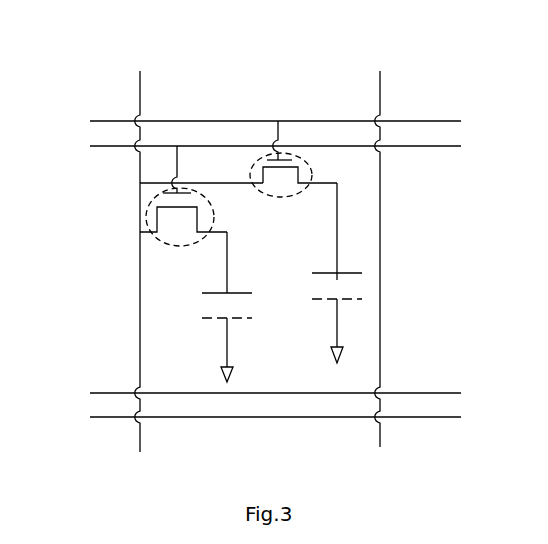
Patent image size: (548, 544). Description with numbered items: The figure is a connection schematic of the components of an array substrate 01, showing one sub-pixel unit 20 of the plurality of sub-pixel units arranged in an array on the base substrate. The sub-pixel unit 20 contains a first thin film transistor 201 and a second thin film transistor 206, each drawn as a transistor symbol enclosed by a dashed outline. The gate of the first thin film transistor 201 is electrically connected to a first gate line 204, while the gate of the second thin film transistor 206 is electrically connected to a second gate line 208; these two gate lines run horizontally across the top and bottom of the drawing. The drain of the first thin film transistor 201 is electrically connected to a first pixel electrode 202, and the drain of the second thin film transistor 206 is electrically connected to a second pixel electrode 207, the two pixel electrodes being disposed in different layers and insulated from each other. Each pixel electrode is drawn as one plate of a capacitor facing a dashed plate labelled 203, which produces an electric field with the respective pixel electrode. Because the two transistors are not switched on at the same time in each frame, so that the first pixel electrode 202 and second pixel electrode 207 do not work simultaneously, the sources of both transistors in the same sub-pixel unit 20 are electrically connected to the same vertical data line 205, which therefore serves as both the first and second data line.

The array substrate 01 is at (103, 39).
The sub-pixel unit 20 is at (309, 113).
The first thin film transistor 201 is at (150, 212).
The first pixel electrode 202 is at (148, 262).
The common electrode 203 is at (278, 324).
The first gate line 204 is at (246, 298).
The data line 205 is at (140, 93).
The second thin film transistor 206 is at (310, 171).
The second pixel electrode 207 is at (411, 231).
The second gate line 208 is at (245, 242).